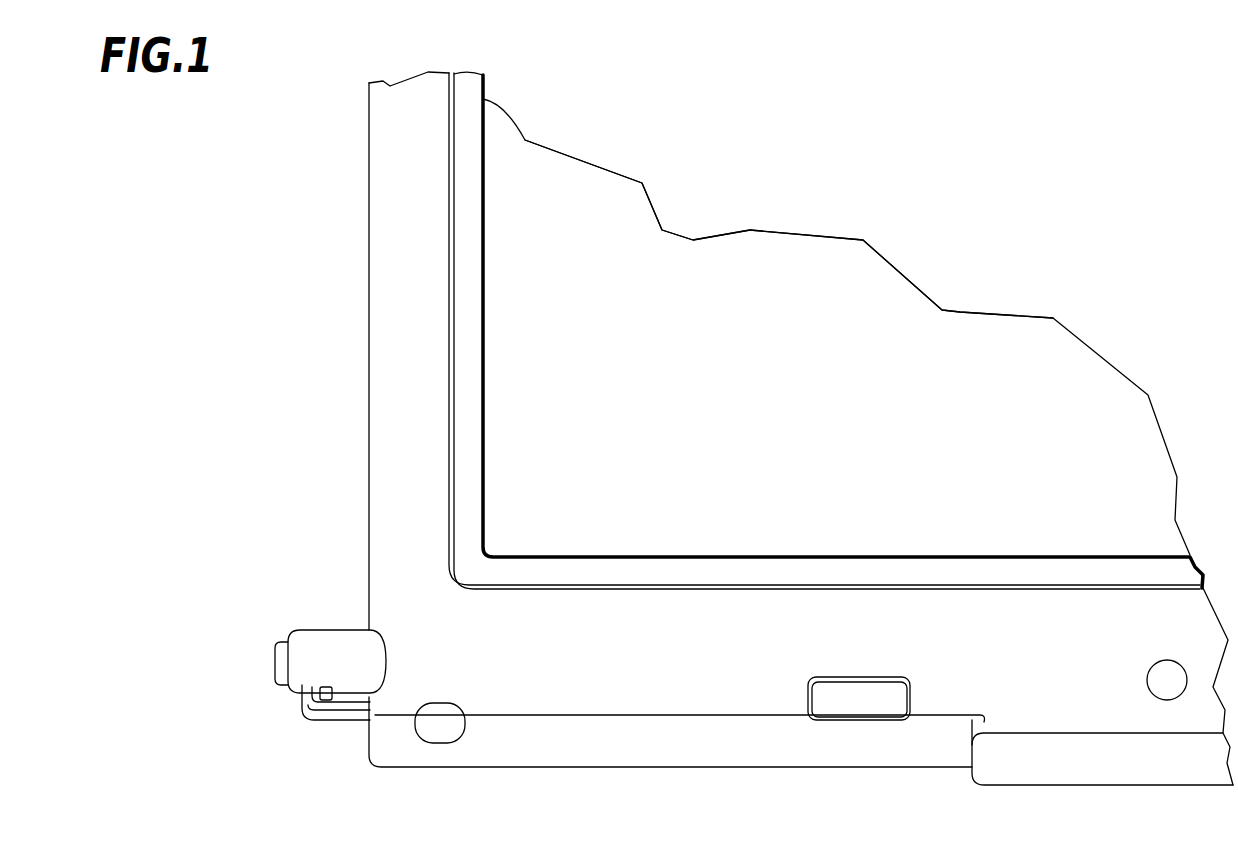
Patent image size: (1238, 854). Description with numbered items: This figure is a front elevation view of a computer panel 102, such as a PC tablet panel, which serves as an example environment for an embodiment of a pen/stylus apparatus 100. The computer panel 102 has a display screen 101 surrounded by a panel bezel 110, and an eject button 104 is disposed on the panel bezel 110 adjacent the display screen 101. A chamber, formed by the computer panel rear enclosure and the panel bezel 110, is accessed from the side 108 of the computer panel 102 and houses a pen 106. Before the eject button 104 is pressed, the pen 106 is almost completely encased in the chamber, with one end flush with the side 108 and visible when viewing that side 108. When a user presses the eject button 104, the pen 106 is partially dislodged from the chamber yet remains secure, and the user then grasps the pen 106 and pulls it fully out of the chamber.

The pen/stylus apparatus 100 is at (252, 643).
The display screen 101 is at (1105, 385).
The computer panel 102 is at (995, 200).
The eject button 104 is at (830, 693).
The pen 106 is at (333, 643).
The side 108 is at (325, 432).
The panel bezel 110 is at (985, 620).